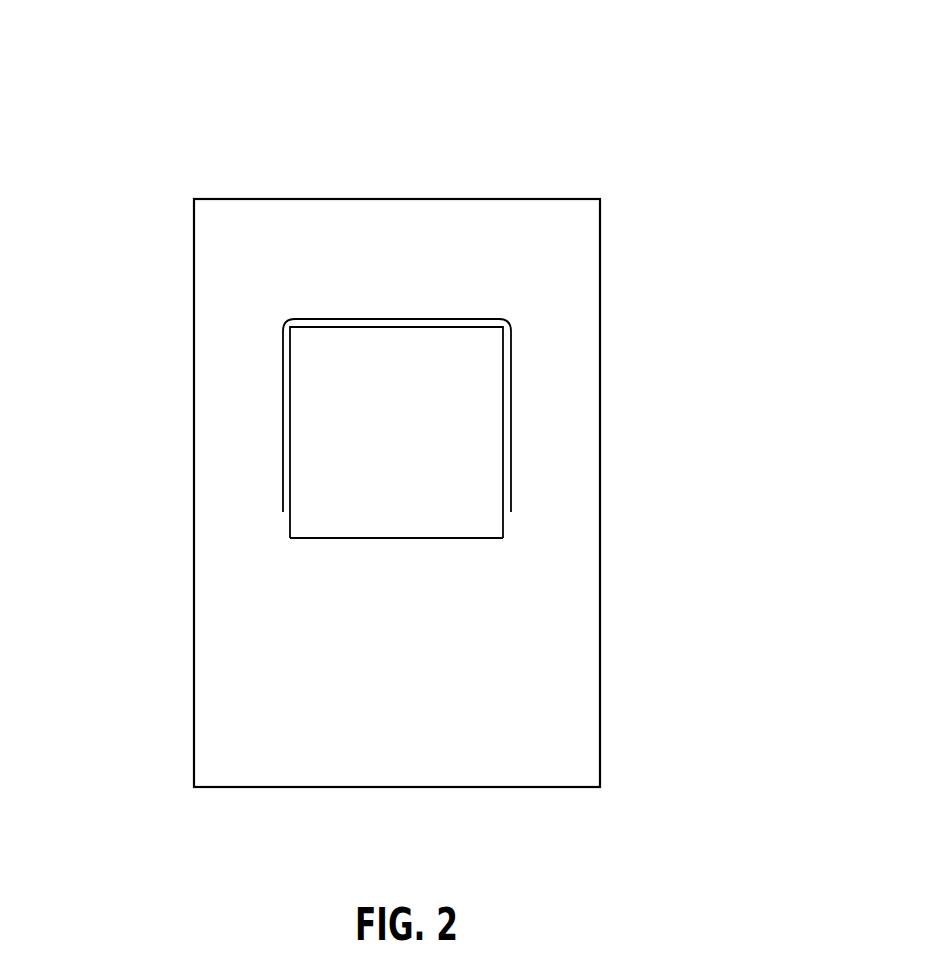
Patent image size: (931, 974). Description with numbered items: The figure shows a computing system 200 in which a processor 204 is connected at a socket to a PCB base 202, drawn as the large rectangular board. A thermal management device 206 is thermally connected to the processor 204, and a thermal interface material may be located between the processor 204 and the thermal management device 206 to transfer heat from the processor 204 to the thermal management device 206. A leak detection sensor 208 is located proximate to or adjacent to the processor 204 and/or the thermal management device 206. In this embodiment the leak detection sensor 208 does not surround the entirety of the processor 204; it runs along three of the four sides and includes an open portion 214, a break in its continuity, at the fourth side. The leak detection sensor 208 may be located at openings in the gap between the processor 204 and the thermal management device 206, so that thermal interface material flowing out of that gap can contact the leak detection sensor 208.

The computing system 200 is at (736, 74).
The PCB base 202 is at (572, 287).
The processor 204 is at (510, 484).
The thermal management device 206 is at (467, 375).
The leak detection sensor 208 is at (272, 346).
The open portion 214 is at (500, 548).